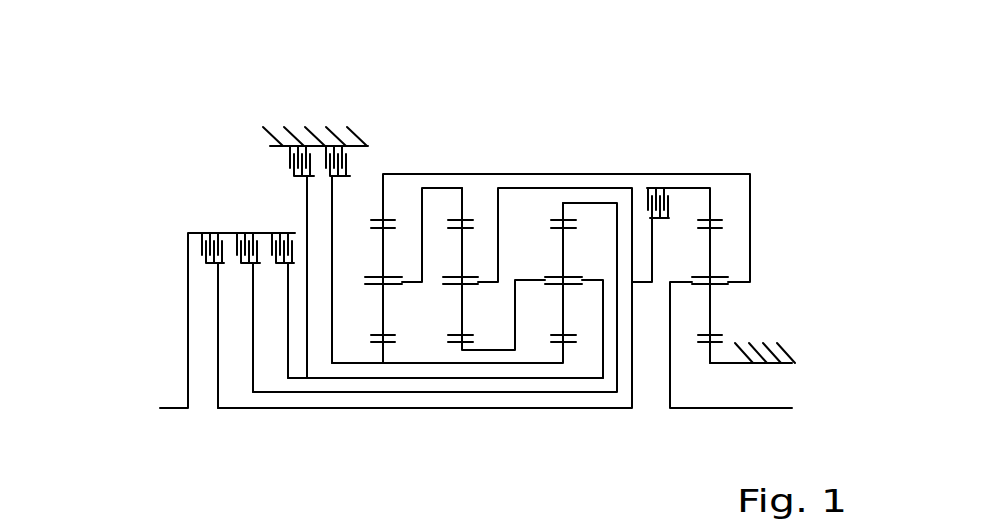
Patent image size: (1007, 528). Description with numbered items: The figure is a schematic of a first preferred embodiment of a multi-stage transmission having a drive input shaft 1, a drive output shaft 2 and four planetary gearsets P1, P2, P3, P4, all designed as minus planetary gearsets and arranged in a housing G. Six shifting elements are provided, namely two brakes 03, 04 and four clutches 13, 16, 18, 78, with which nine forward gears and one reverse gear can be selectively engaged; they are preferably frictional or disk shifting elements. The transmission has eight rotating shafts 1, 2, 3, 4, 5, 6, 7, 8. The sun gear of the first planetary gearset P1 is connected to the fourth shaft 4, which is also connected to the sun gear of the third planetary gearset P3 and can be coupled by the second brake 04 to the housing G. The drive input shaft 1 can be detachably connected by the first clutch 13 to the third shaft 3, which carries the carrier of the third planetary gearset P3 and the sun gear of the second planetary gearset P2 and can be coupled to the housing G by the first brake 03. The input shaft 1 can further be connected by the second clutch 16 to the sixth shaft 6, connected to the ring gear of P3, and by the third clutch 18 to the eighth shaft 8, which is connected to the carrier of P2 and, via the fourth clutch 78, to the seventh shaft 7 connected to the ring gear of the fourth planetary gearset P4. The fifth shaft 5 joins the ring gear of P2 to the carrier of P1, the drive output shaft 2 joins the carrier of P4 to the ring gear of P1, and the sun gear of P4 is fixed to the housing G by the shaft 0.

The drive input shaft 1 is at (168, 412).
The drive output shaft 2 is at (400, 173).
The third shaft 3 is at (477, 352).
The fourth shaft 4 is at (382, 352).
The fifth shaft 5 is at (452, 205).
The sixth shaft 6 is at (582, 203).
The seventh shaft 7 is at (710, 200).
The eighth shaft 8 is at (483, 278).
The shaft 0 is at (727, 367).
The first brake 03 is at (293, 168).
The second brake 04 is at (357, 143).
The first clutch 13 is at (268, 235).
The second clutch 16 is at (233, 243).
The third clutch 18 is at (200, 248).
The fourth clutch 78 is at (647, 200).
The housing G is at (308, 132).
The first planetary gearset P1 is at (383, 152).
The second planetary gearset P2 is at (460, 152).
The third planetary gearset P3 is at (562, 152).
The fourth planetary gearset P4 is at (710, 152).